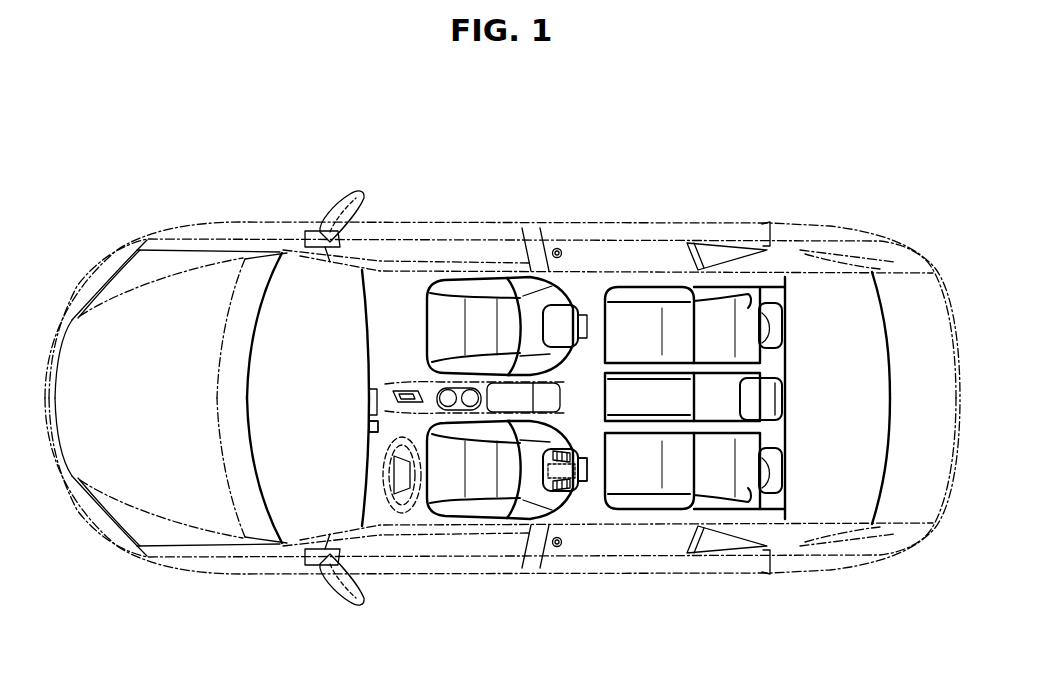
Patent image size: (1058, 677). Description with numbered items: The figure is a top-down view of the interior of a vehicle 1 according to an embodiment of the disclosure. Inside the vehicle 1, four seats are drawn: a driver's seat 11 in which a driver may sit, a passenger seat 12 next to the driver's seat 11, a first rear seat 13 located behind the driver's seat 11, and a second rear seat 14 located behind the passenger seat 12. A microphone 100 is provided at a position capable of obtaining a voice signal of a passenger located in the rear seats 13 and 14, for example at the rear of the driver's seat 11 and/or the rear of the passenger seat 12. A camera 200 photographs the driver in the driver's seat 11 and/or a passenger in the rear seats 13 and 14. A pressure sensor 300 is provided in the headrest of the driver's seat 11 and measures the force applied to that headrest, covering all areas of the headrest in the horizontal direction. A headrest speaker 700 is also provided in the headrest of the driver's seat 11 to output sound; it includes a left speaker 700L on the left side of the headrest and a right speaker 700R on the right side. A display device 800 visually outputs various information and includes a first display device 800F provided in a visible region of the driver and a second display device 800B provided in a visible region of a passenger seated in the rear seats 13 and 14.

The vehicle 1 is at (157, 297).
The driver's seat 11 is at (440, 500).
The passenger seat 12 is at (461, 285).
The first rear seat 13 is at (750, 490).
The second rear seat 14 is at (750, 308).
The microphone 100 is at (553, 250).
The camera 200 is at (372, 430).
The pressure sensor 300 is at (590, 470).
The headrest speaker 700 is at (563, 632).
The right speaker 700R is at (555, 447).
The left speaker 700L is at (558, 485).
The display device 800 is at (598, 126).
The first display device 800F is at (378, 392).
The second display device 800B is at (589, 458).